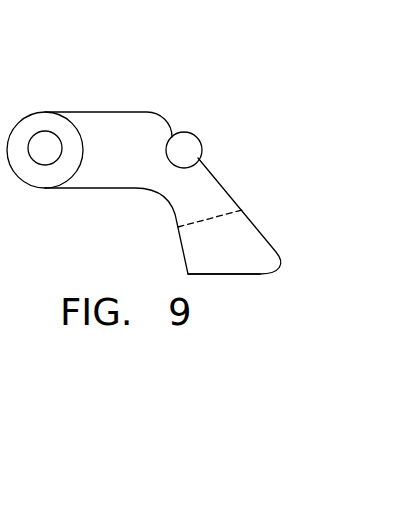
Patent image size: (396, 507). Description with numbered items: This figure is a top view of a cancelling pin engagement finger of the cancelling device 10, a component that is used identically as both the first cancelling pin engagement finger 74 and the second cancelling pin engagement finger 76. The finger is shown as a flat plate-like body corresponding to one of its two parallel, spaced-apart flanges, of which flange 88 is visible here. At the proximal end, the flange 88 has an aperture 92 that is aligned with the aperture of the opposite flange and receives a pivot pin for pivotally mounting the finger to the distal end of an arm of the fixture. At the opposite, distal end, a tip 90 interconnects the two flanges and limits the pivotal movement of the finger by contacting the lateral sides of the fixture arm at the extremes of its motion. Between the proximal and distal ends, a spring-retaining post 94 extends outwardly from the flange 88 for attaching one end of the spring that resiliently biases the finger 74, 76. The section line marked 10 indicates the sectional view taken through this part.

The first cancelling pin engagement finger 74 is at (144, 173).
The second cancelling pin engagement finger 76 is at (144, 173).
The flange 88 is at (100, 124).
The tip 90 is at (242, 260).
The aperture 92 is at (31, 141).
The spring-retaining post 94 is at (192, 146).
The cancelling device 10 is at (360, 315).